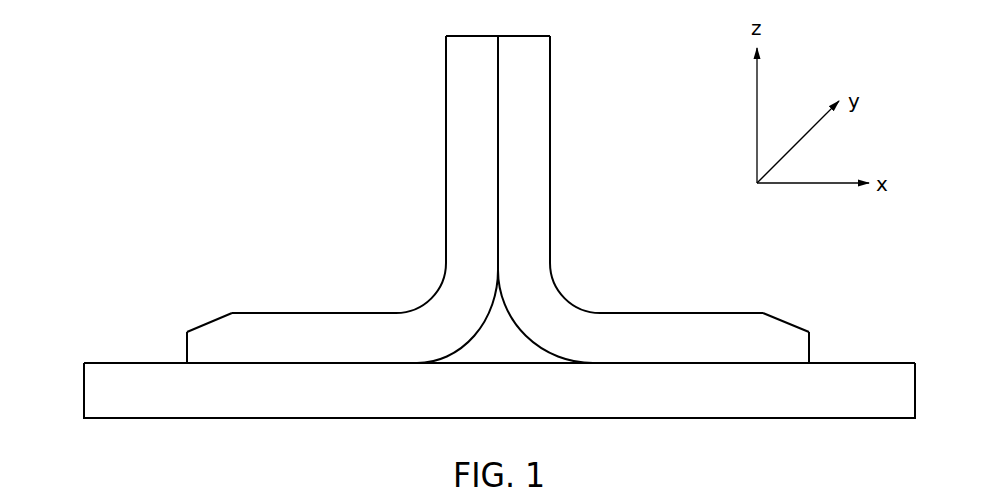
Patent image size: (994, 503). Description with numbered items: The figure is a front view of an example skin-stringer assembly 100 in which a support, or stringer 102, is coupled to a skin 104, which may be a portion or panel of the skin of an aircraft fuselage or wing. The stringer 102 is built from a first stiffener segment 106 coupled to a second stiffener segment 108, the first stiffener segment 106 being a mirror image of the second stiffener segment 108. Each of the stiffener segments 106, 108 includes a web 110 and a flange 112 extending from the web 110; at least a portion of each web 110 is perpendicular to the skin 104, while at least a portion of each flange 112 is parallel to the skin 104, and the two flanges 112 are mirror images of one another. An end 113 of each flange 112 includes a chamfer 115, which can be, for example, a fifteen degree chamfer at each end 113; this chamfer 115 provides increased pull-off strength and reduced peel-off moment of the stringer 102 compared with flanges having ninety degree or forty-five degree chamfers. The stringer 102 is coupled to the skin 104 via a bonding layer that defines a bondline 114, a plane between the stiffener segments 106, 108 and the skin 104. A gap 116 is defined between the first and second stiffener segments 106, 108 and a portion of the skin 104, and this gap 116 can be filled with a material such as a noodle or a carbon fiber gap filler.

The skin-stringer assembly 100 is at (199, 51).
The stringer 102 is at (416, 32).
The skin 104 is at (101, 384).
The first stiffener segment 106 is at (434, 139).
The second stiffener segment 108 is at (556, 139).
The web 110 is at (449, 243).
The flange 112 is at (327, 302).
The end of flange 113 is at (206, 302).
The bondline 114 is at (692, 363).
The chamfer 115 is at (187, 332).
The gap 116 is at (483, 349).